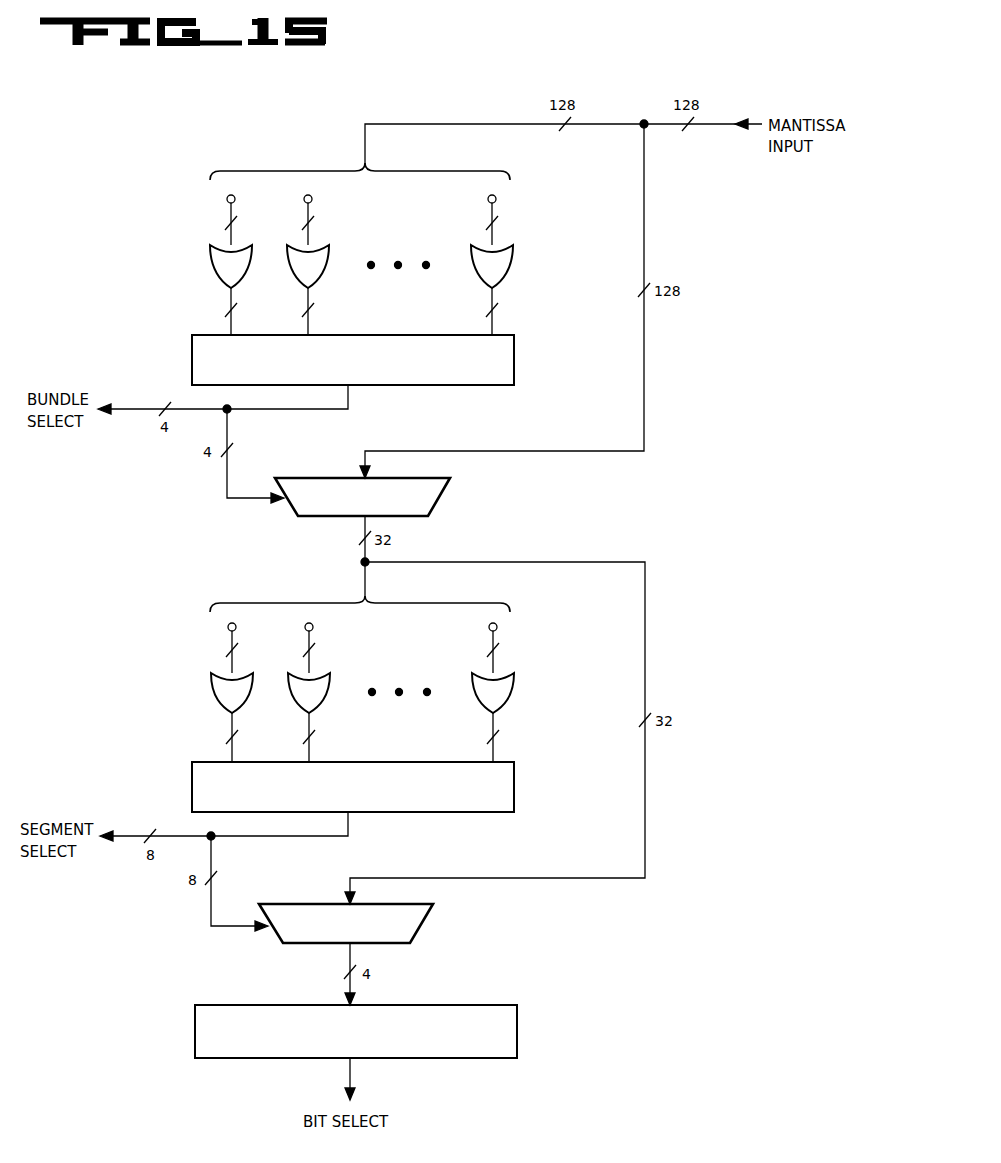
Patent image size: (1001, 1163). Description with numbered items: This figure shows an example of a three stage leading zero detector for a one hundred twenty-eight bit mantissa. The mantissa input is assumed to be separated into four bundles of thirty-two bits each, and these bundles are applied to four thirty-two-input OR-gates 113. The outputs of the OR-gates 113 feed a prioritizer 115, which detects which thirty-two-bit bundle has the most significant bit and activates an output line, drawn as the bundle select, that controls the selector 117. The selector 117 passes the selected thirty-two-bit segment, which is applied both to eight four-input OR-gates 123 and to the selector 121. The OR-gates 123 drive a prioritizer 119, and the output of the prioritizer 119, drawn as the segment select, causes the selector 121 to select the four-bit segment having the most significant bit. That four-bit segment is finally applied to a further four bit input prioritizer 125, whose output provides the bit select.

The 32-input OR-gate 113 is at (357, 265).
The prioritizer 115 is at (353, 360).
The selector 117 is at (450, 497).
The prioritizer 119 is at (353, 787).
The selector 121 is at (433, 922).
The 4-input OR-gate 123 is at (362, 692).
The 4 bit input prioritizer 125 is at (356, 1031).